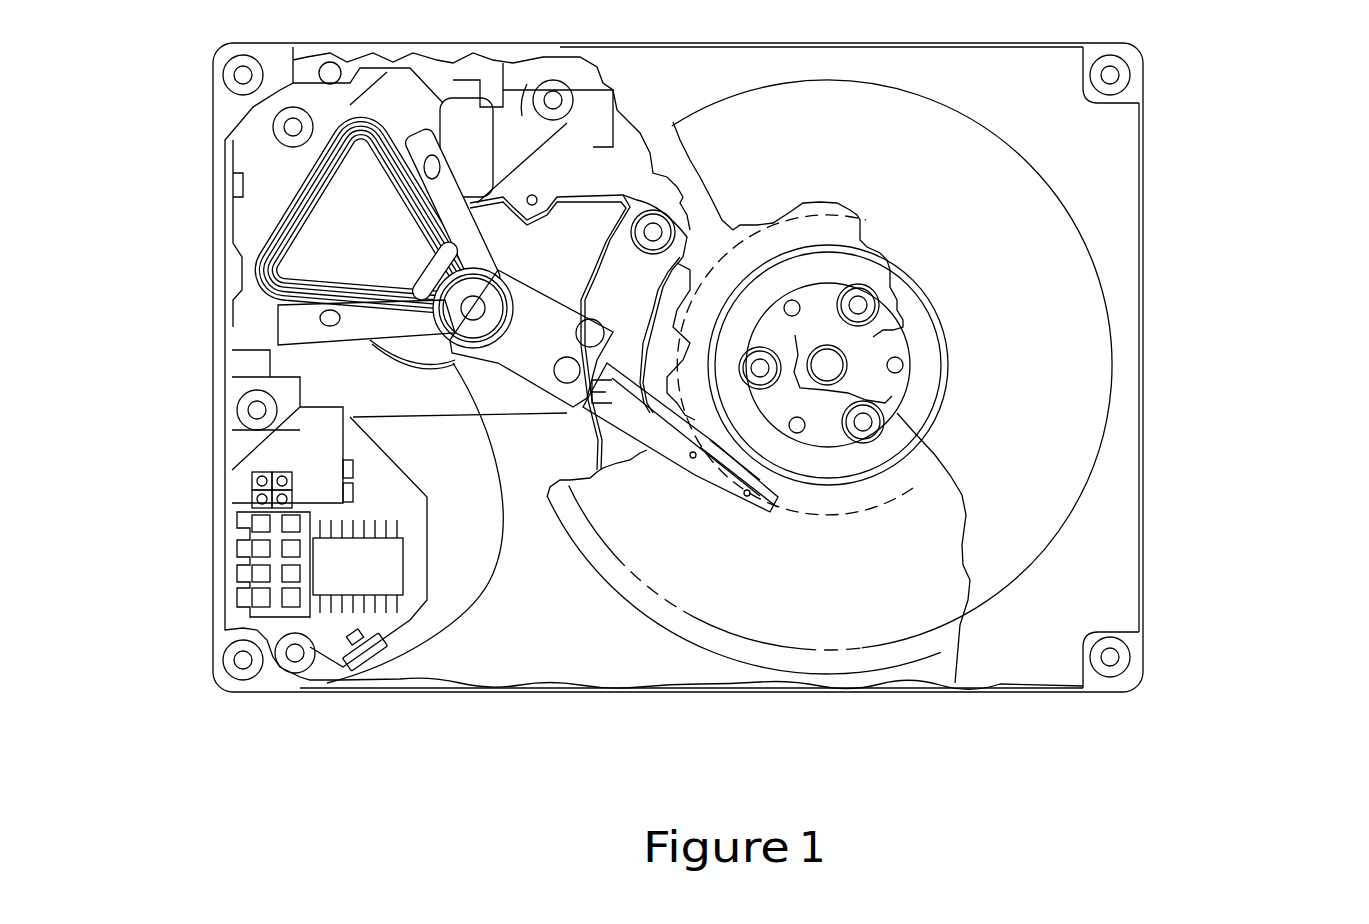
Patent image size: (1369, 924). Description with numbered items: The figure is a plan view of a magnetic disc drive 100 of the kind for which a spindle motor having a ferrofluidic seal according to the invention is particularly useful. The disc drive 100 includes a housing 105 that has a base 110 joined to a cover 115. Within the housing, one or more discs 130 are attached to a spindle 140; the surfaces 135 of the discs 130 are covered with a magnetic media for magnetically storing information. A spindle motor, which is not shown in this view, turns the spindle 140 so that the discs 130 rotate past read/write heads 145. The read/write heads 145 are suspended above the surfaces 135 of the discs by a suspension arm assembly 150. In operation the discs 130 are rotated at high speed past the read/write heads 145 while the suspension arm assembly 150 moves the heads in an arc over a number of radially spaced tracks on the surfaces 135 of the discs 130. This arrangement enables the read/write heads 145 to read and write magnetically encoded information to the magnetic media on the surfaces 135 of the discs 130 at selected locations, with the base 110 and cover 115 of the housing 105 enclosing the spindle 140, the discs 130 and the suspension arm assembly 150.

The disc drive 100 is at (1180, 205).
The housing 105 is at (262, 692).
The base 110 is at (560, 643).
The cover 115 is at (1080, 629).
The discs 130 is at (673, 583).
The surfaces 135 is at (878, 603).
The spindle 140 is at (827, 435).
The read/write heads 145 is at (763, 515).
The suspension arm assembly 150 is at (258, 202).